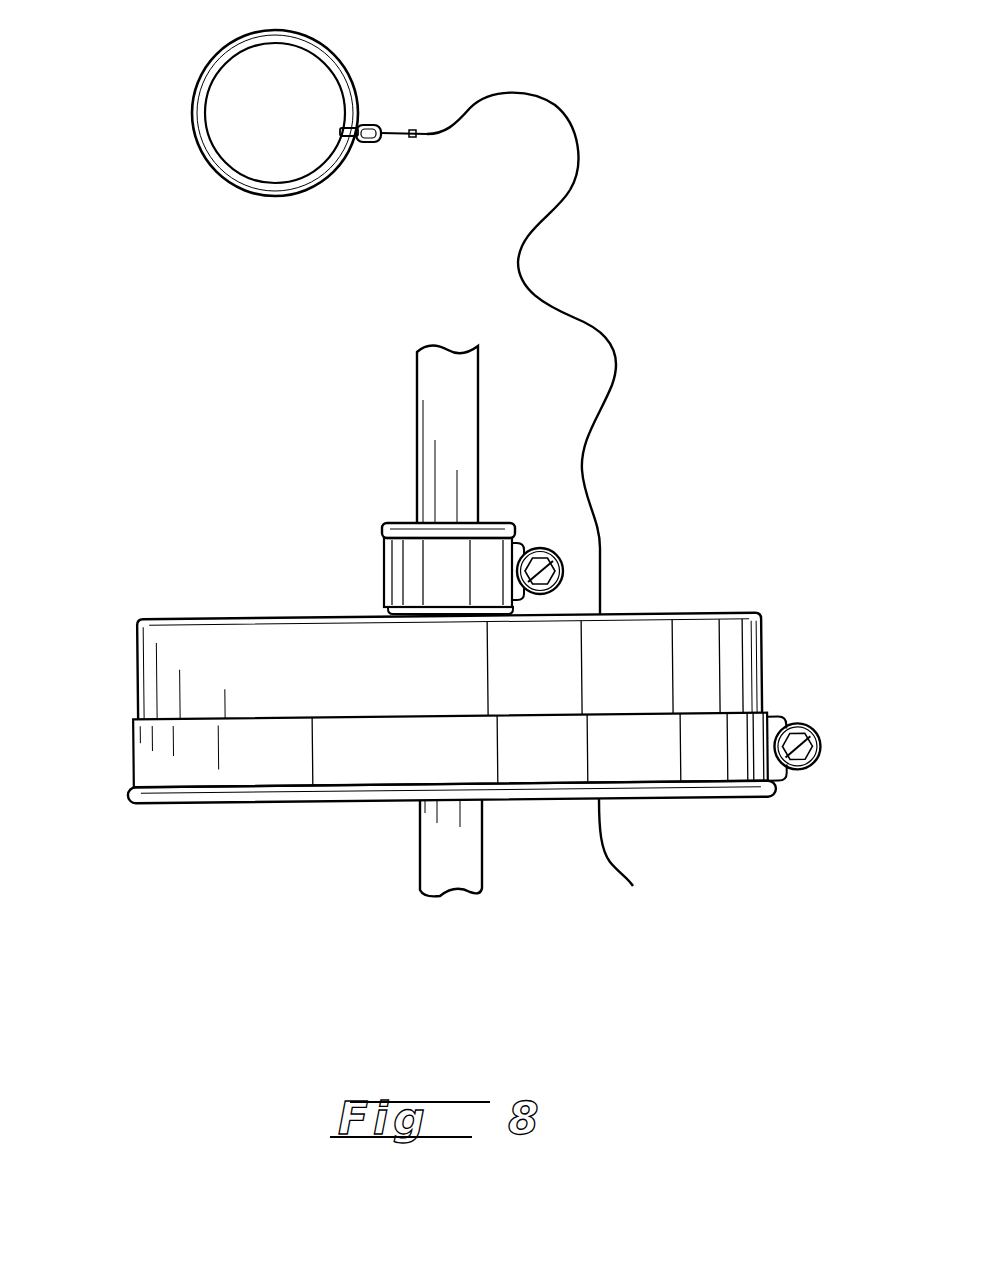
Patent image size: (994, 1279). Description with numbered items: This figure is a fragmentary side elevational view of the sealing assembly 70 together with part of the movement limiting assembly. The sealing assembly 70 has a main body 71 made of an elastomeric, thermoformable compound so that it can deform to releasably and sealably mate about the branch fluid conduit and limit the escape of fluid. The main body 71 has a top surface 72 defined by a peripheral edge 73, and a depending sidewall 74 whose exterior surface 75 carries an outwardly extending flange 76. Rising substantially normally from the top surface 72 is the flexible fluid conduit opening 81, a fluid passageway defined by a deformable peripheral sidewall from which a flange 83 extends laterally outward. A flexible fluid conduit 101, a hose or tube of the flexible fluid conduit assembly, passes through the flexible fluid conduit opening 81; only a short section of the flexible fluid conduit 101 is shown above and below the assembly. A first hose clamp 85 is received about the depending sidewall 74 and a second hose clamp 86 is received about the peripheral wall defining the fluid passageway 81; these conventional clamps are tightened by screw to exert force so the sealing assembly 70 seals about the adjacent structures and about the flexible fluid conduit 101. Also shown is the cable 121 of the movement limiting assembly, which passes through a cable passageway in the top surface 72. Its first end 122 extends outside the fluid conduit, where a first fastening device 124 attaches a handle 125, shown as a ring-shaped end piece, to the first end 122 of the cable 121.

The sealing assembly 70 is at (221, 580).
The main body 71 is at (602, 617).
The top surface 72 is at (293, 667).
The peripheral edge 73 is at (756, 663).
The depending sidewall 74 is at (450, 700).
The exterior surface 75 is at (449, 669).
The outwardly extending flange 76 is at (452, 792).
The flexible fluid conduit opening 81 is at (412, 523).
The flange 83 is at (513, 528).
The first hose clamp 85 is at (794, 748).
The second hose clamp 86 is at (557, 560).
The flexible fluid conduit 101 is at (470, 395).
The cable 121 is at (558, 476).
The first end 122 is at (531, 93).
The first fastening device 124 is at (361, 140).
The handle 125 is at (318, 42).